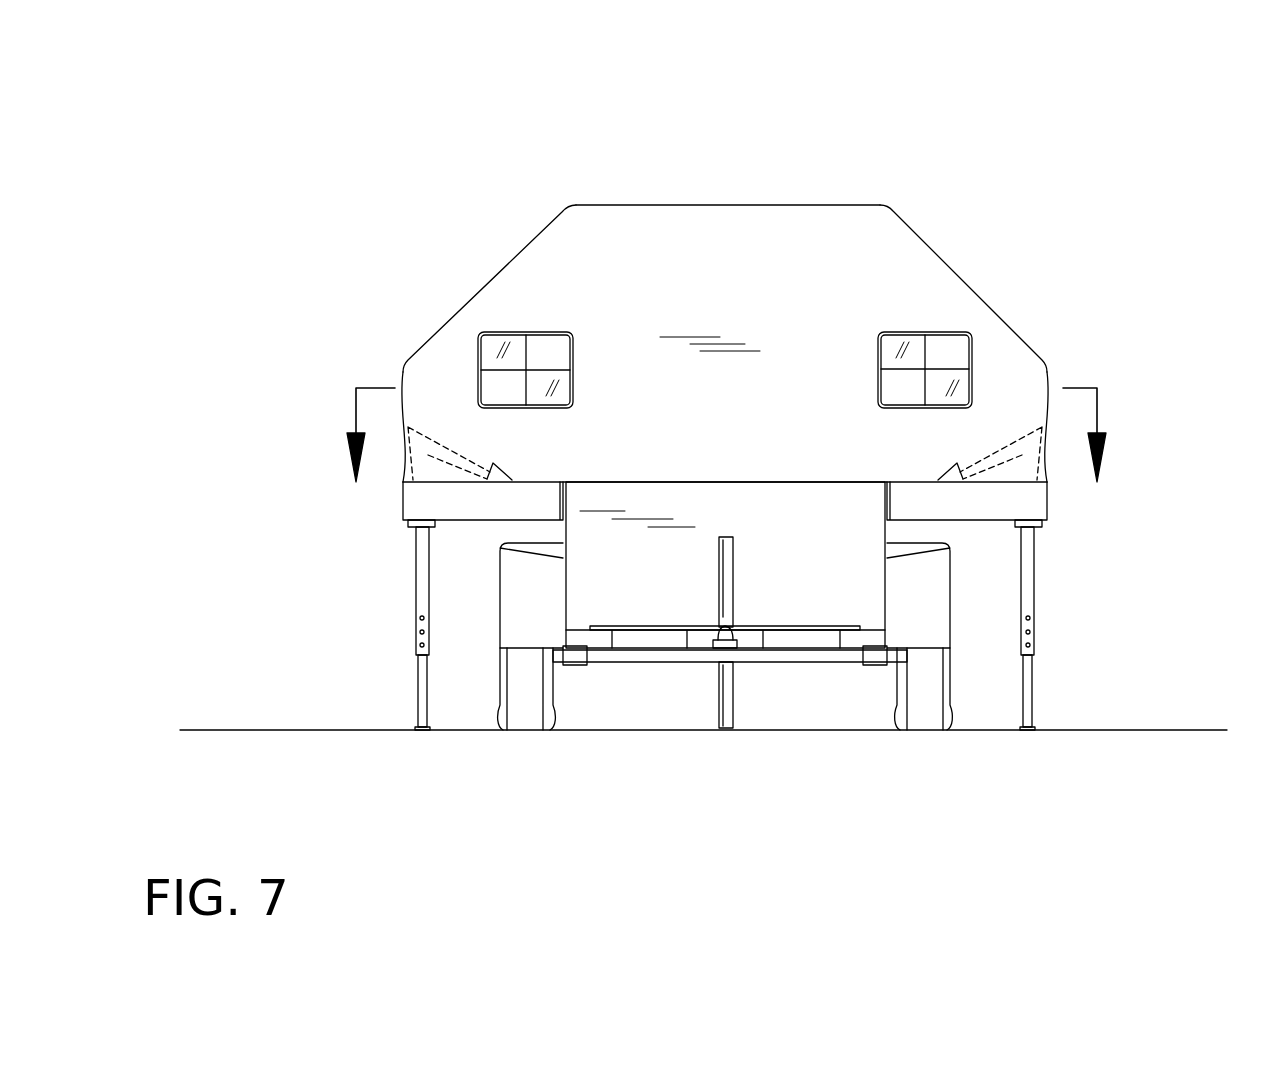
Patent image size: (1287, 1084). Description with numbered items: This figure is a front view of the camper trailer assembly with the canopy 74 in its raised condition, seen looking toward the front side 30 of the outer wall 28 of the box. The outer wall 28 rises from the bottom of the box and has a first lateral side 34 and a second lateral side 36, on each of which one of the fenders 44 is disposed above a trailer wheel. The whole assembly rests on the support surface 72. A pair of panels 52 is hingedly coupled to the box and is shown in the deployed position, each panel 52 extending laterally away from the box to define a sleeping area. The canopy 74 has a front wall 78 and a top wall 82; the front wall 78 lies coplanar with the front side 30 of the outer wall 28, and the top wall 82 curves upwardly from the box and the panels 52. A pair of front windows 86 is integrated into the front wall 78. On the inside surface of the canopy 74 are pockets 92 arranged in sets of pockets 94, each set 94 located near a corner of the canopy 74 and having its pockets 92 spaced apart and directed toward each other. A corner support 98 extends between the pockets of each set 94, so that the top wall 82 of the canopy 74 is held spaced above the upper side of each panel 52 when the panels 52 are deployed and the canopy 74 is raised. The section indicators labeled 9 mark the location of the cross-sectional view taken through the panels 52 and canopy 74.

The section view indicator 9 is at (730, 443).
The outer wall 28 is at (653, 595).
The front side 30 is at (860, 595).
The first lateral side 34 is at (887, 568).
The second lateral side 36 is at (500, 543).
The fender 44 is at (500, 595).
The panel 52 is at (403, 483).
The support surface 72 is at (1208, 730).
The canopy 74 is at (570, 205).
The front wall 78 is at (772, 227).
The top wall 82 is at (884, 208).
The front window 86 is at (458, 460).
The pocket 92 is at (415, 447).
The set of pockets 94 is at (512, 476).
The corner support 98 is at (490, 335).